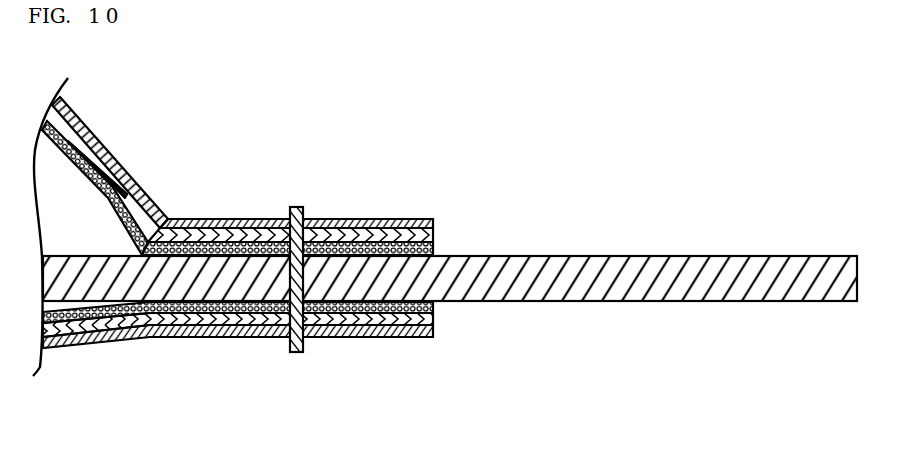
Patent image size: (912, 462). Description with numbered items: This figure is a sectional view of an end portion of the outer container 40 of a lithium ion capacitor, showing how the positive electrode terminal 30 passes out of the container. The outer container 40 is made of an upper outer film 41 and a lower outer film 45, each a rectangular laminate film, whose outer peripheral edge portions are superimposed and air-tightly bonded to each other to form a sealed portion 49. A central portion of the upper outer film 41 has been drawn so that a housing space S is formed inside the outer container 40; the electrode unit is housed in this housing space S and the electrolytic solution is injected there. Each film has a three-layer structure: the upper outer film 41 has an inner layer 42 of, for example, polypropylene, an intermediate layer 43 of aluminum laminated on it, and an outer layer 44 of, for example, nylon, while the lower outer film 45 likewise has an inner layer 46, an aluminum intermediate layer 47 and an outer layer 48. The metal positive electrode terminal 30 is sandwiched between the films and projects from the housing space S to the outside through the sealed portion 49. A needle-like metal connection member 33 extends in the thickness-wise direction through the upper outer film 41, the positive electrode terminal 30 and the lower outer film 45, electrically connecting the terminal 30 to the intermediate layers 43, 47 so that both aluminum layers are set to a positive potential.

The positive electrode terminal 30 is at (778, 255).
The connection member 33 is at (298, 207).
The outer container 40 is at (118, 125).
The upper outer film 41 is at (384, 180).
The inner layer 42 is at (438, 248).
The intermediate layer 43 is at (438, 233).
The outer layer 44 is at (400, 219).
The lower outer film 45 is at (336, 370).
The inner layer 46 is at (438, 305).
The intermediate layer 47 is at (440, 320).
The outer layer 48 is at (392, 337).
The sealed portion 49 is at (337, 345).
The housing space S is at (85, 240).